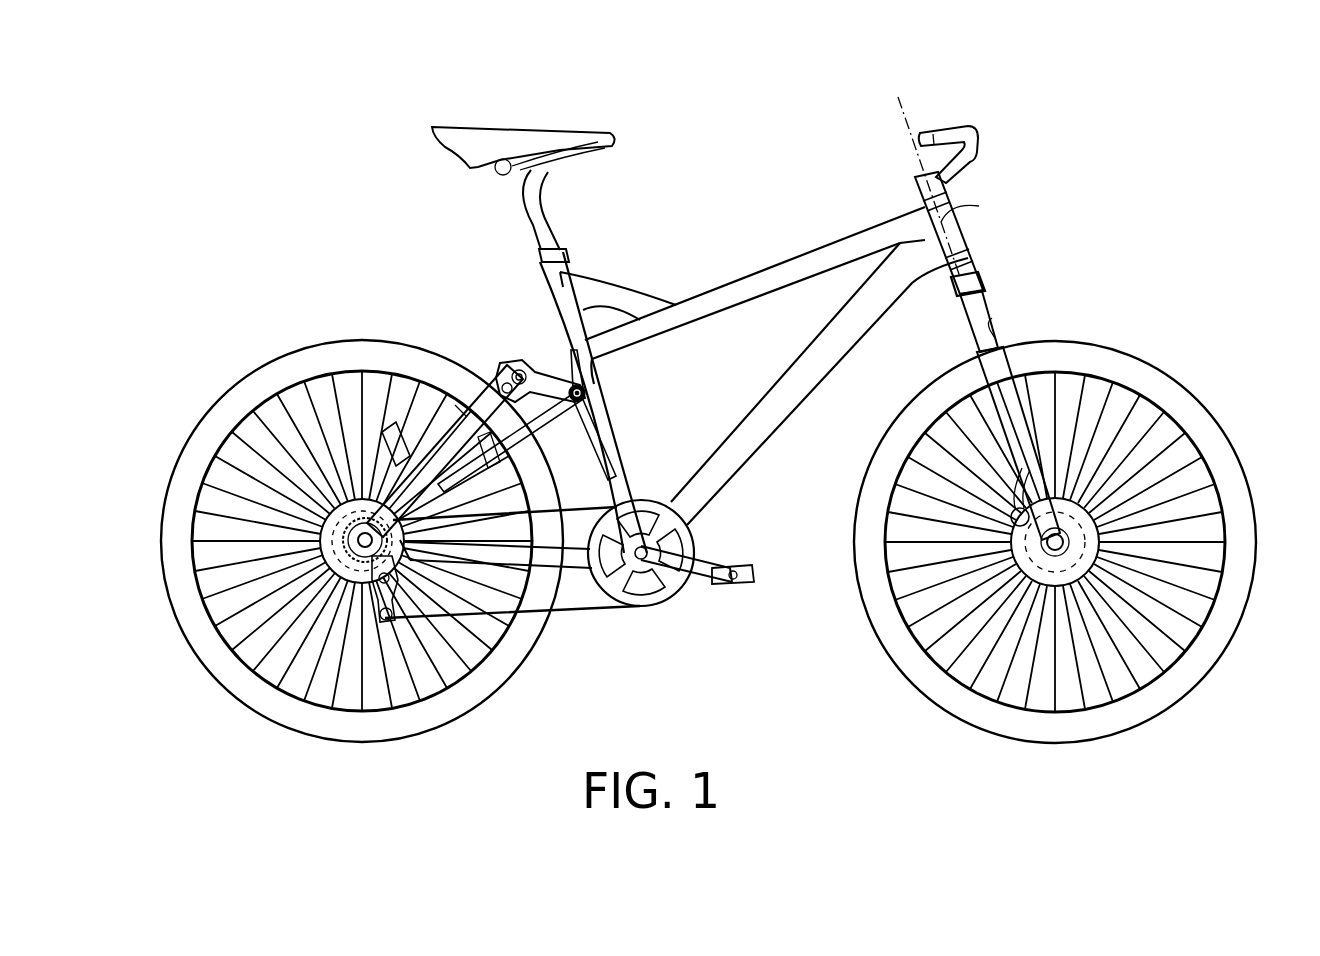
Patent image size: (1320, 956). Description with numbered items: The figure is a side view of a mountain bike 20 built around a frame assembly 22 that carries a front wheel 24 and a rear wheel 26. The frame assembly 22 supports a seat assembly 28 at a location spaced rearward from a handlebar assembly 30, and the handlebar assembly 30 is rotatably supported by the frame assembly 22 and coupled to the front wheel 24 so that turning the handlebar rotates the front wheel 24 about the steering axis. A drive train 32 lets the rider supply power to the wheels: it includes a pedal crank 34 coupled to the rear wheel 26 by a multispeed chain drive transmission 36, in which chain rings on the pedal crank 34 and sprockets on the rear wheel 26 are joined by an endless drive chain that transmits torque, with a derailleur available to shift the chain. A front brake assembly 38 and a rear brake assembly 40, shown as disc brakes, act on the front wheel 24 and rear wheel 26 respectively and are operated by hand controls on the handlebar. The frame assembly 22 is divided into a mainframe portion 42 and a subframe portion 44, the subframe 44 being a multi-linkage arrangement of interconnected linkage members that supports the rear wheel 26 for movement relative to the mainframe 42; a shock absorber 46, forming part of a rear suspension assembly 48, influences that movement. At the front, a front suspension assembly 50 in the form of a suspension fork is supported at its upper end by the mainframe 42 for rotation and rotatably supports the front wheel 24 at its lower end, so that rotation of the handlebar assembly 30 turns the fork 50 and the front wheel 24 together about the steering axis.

The mountain bike 20 is at (728, 105).
The frame assembly 22 is at (707, 280).
The front wheel 24 is at (1198, 397).
The rear wheel 26 is at (316, 342).
The seat assembly 28 is at (466, 117).
The handlebar assembly 30 is at (955, 122).
The drive train 32 is at (653, 623).
The pedal crank 34 is at (713, 548).
The multispeed chain drive transmission 36 is at (588, 621).
The front brake assembly 38 is at (996, 519).
The rear brake assembly 40 is at (318, 500).
The mainframe portion 42 is at (700, 328).
The subframe portion 44 is at (505, 353).
The shock absorber 46 is at (453, 473).
The rear suspension assembly 48 is at (426, 234).
The front suspension assembly 50 is at (1031, 321).